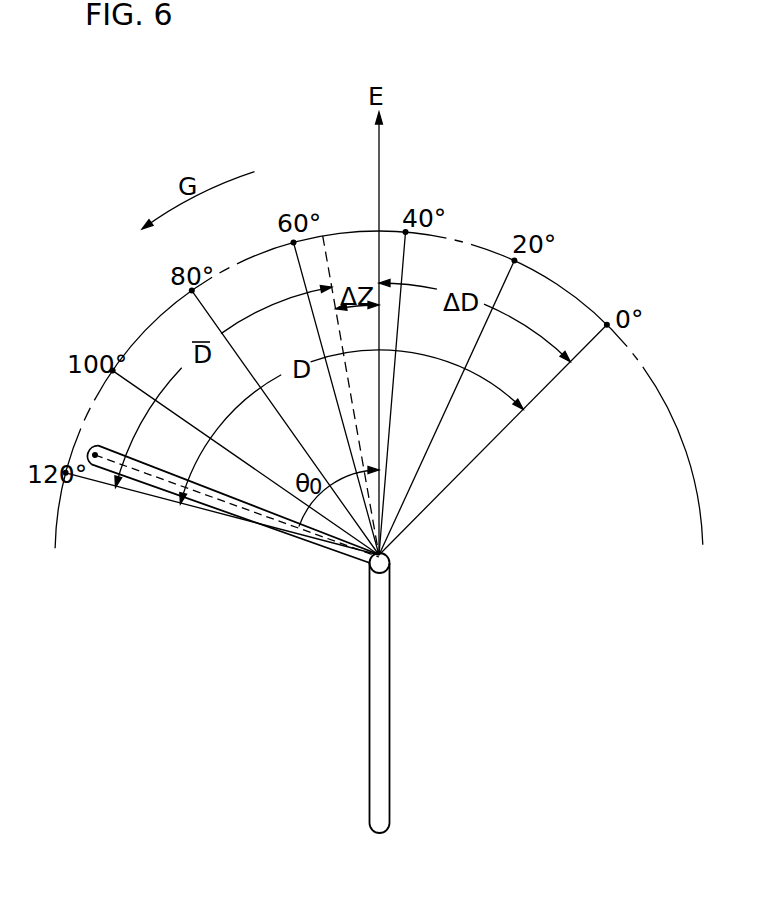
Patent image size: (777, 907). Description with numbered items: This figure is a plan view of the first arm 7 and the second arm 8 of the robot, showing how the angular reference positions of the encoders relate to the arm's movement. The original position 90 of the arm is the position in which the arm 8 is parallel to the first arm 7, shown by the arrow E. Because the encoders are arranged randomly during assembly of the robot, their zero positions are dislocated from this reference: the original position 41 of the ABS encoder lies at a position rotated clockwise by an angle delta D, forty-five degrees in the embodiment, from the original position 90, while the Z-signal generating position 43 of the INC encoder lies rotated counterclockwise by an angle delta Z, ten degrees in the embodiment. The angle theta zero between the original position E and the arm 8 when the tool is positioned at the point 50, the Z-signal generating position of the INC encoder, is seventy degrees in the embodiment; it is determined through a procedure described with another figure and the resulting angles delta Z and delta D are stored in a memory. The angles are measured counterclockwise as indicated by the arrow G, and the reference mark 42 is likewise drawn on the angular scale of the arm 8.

The first arm 7 is at (385, 700).
The arm 8 is at (236, 518).
The original position of the ABS encoder 41 is at (607, 325).
The second reference position (20 degrees) 42 is at (516, 262).
The Z-signal generating position of the INC encoder 43 is at (321, 234).
The point 50 is at (95, 455).
The original position 90 is at (380, 228).